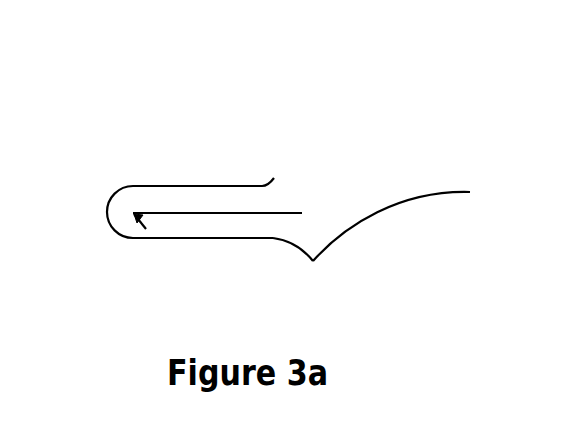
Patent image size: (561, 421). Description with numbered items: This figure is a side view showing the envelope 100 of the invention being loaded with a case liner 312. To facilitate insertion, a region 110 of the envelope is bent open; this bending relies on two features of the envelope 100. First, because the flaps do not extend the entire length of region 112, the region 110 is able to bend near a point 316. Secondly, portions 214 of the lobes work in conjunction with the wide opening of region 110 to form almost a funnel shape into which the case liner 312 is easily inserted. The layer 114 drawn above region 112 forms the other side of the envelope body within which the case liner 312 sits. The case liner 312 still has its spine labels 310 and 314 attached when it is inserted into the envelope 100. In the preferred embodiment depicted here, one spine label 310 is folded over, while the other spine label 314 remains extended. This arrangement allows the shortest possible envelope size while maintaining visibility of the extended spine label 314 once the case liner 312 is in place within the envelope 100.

The envelope 100 is at (168, 115).
The region 110 is at (375, 212).
The region 112 is at (162, 238).
The upper layer 114 is at (150, 186).
The portions of lobes 214 is at (266, 181).
The spine label 310 is at (136, 223).
The case liner 312 is at (187, 213).
The spine label 314 is at (290, 213).
The point 316 is at (270, 238).